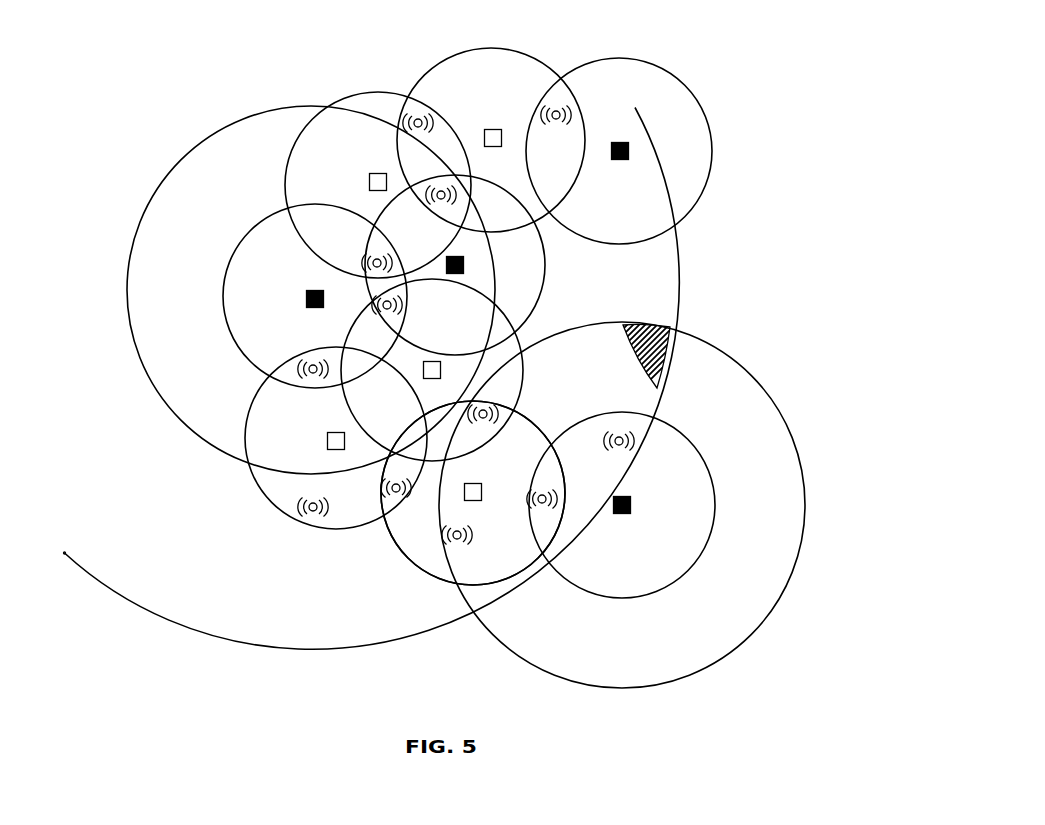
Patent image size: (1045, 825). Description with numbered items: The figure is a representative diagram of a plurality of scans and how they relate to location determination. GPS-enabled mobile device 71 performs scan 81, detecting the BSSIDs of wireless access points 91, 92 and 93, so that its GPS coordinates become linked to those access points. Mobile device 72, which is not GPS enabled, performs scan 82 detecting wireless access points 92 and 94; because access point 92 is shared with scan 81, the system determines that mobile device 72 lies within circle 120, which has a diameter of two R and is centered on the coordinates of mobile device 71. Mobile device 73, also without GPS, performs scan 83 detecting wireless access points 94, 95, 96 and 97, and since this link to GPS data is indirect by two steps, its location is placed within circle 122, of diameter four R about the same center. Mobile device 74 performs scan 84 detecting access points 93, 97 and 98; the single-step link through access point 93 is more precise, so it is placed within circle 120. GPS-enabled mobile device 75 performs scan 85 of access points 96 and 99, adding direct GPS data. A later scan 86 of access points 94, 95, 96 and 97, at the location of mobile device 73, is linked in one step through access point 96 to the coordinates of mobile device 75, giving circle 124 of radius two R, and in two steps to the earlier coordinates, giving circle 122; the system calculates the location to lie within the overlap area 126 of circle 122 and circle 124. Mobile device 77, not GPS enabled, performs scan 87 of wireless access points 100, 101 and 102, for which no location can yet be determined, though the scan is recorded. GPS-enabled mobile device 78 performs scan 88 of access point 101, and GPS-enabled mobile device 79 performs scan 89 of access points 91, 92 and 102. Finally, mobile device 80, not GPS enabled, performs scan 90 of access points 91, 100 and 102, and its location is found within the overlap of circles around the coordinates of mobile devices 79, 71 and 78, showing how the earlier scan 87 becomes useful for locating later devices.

The mobile device 71 is at (306, 296).
The mobile device 72 is at (433, 361).
The mobile device 73 is at (478, 483).
The mobile device 74 is at (327, 441).
The mobile device 75 is at (620, 514).
The mobile device 77 is at (486, 130).
The mobile device 78 is at (620, 160).
The mobile device 79 is at (461, 262).
The mobile device 80 is at (369, 182).
The scan 81 is at (222, 290).
The scan 82 is at (522, 378).
The scan 83 is at (530, 414).
The scan 84 is at (246, 419).
The scan 85 is at (714, 492).
The scan 86 is at (540, 432).
The scan 87 is at (418, 84).
The scan 88 is at (714, 157).
The scan 89 is at (547, 290).
The scan 90 is at (286, 180).
The wireless access point 91 is at (364, 262).
The wireless access point 92 is at (372, 306).
The wireless access point 93 is at (304, 362).
The wireless access point 94 is at (490, 408).
The wireless access point 95 is at (469, 544).
The wireless access point 96 is at (528, 500).
The wireless access point 97 is at (381, 488).
The wireless access point 98 is at (303, 516).
The wireless access point 99 is at (611, 449).
The wireless access point 100 is at (446, 104).
The wireless access point 101 is at (571, 112).
The wireless access point 102 is at (436, 204).
The circle 120 is at (136, 224).
The circle 122 is at (691, 270).
The circle 124 is at (750, 373).
The overlap area 126 is at (649, 325).